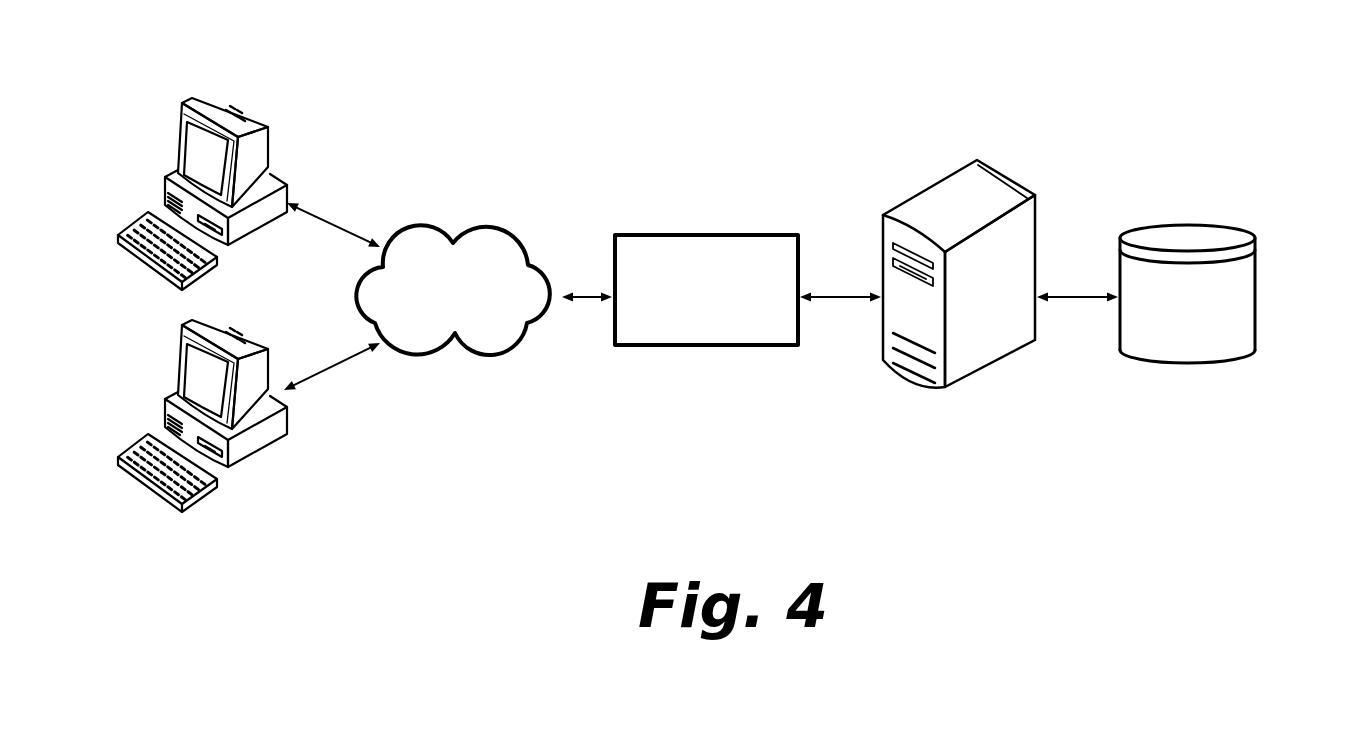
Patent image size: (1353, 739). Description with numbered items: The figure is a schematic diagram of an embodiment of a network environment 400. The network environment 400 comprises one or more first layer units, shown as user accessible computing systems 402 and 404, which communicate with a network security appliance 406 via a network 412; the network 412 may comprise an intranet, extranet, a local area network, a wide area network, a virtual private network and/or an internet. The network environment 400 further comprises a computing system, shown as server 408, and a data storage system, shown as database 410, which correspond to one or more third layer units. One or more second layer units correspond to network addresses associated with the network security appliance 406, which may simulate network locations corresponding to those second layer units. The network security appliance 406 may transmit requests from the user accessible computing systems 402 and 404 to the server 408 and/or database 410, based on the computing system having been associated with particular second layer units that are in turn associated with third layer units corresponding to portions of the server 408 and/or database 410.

The network environment 400 is at (833, 411).
The user accessible computing system 402 is at (262, 150).
The user accessible computing system 404 is at (290, 432).
The network security appliance 406 is at (772, 236).
The server 408 is at (983, 172).
The database 410 is at (1215, 227).
The network 412 is at (485, 223).